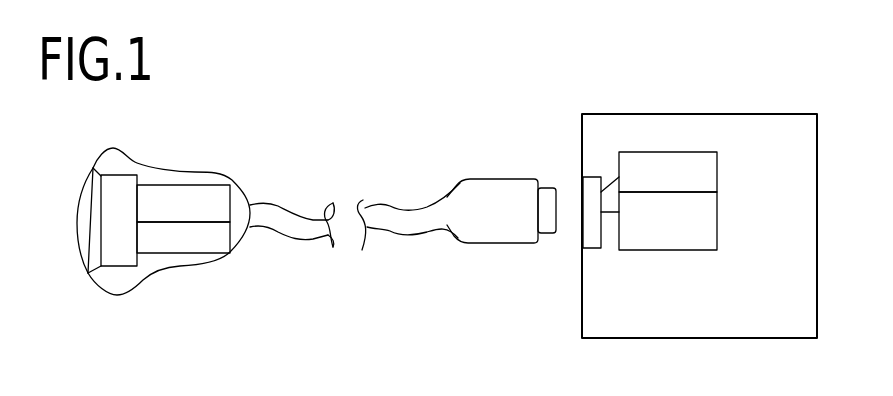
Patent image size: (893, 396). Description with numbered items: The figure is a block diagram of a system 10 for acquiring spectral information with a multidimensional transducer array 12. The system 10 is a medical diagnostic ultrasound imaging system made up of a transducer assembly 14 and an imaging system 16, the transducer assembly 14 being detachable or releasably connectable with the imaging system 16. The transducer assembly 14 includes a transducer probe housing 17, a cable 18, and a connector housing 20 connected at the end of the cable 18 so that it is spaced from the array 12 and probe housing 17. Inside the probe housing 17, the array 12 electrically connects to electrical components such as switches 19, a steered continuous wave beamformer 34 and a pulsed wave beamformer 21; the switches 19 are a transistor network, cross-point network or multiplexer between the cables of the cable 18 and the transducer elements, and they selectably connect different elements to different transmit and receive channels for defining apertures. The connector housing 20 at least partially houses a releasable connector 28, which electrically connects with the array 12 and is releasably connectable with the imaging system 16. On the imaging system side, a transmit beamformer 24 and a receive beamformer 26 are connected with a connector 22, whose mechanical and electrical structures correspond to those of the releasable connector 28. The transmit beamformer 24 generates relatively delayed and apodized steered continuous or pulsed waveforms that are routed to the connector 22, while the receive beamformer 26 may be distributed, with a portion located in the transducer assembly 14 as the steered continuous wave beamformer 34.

The system 10 is at (313, 118).
The multidimensional transducer array 12 is at (78, 210).
The transducer assembly 14 is at (358, 170).
The imaging system 16 is at (817, 228).
The transducer probe housing 17 is at (218, 173).
The cable 18 is at (390, 232).
The switches 19 is at (117, 267).
The connector housing 20 is at (492, 179).
The pulsed wave beamformer 21 is at (163, 253).
The connector 22 is at (592, 248).
The transmit beamformer 24 is at (650, 152).
The receive beamformer 26 is at (672, 250).
The releasable connector 28 is at (548, 234).
The steered continuous wave beamformer 34 is at (167, 186).